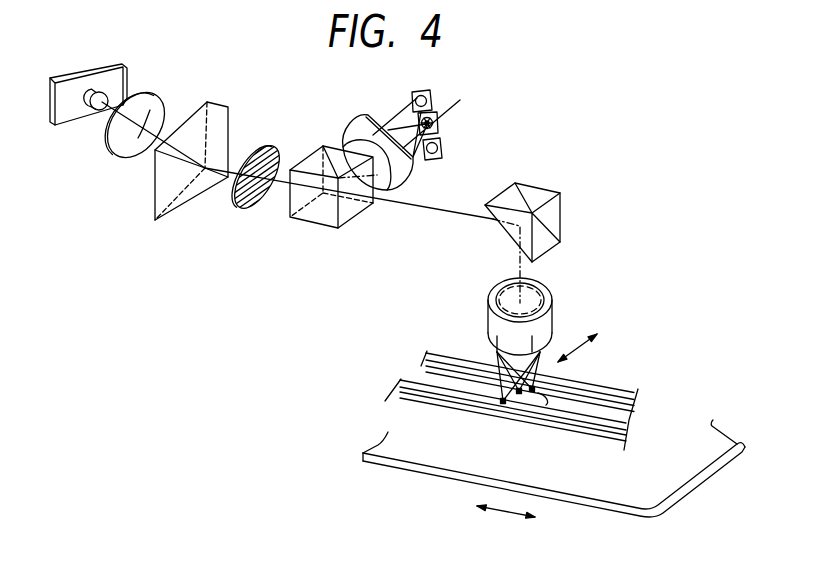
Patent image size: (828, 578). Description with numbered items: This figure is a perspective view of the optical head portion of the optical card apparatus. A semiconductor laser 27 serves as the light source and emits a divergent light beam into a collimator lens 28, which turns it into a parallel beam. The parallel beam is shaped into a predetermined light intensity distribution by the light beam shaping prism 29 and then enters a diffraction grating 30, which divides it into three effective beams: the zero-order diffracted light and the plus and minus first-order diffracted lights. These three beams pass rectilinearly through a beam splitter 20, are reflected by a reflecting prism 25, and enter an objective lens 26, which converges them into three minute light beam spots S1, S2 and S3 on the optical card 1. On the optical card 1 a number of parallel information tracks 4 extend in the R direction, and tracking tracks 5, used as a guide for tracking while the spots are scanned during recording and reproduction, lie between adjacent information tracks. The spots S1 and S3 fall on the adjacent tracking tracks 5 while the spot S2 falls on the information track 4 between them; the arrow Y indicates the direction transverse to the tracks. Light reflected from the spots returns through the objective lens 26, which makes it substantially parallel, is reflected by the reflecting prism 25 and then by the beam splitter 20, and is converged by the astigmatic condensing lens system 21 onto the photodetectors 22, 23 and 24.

The optical card 1 is at (423, 472).
The information tracks 4 is at (629, 421).
The tracking tracks 5 is at (636, 403).
The beam splitter 20 is at (322, 230).
The astigmatic condensing lens system 21 is at (347, 141).
The photodetector 22 is at (432, 93).
The photodetector 23 is at (438, 122).
The photodetector 24 is at (442, 148).
The reflecting prism 25 is at (561, 218).
The objective lens 26 is at (552, 316).
The semiconductor laser 27 is at (75, 126).
The collimator lens 28 is at (127, 157).
The light beam shaping prism 29 is at (183, 216).
The diffraction grating 30 is at (249, 211).
The light beam spot S1 is at (500, 404).
The light beam spot S2 is at (516, 394).
The light beam spot S3 is at (551, 385).
The tracking direction Y is at (577, 343).
The R direction R is at (506, 522).